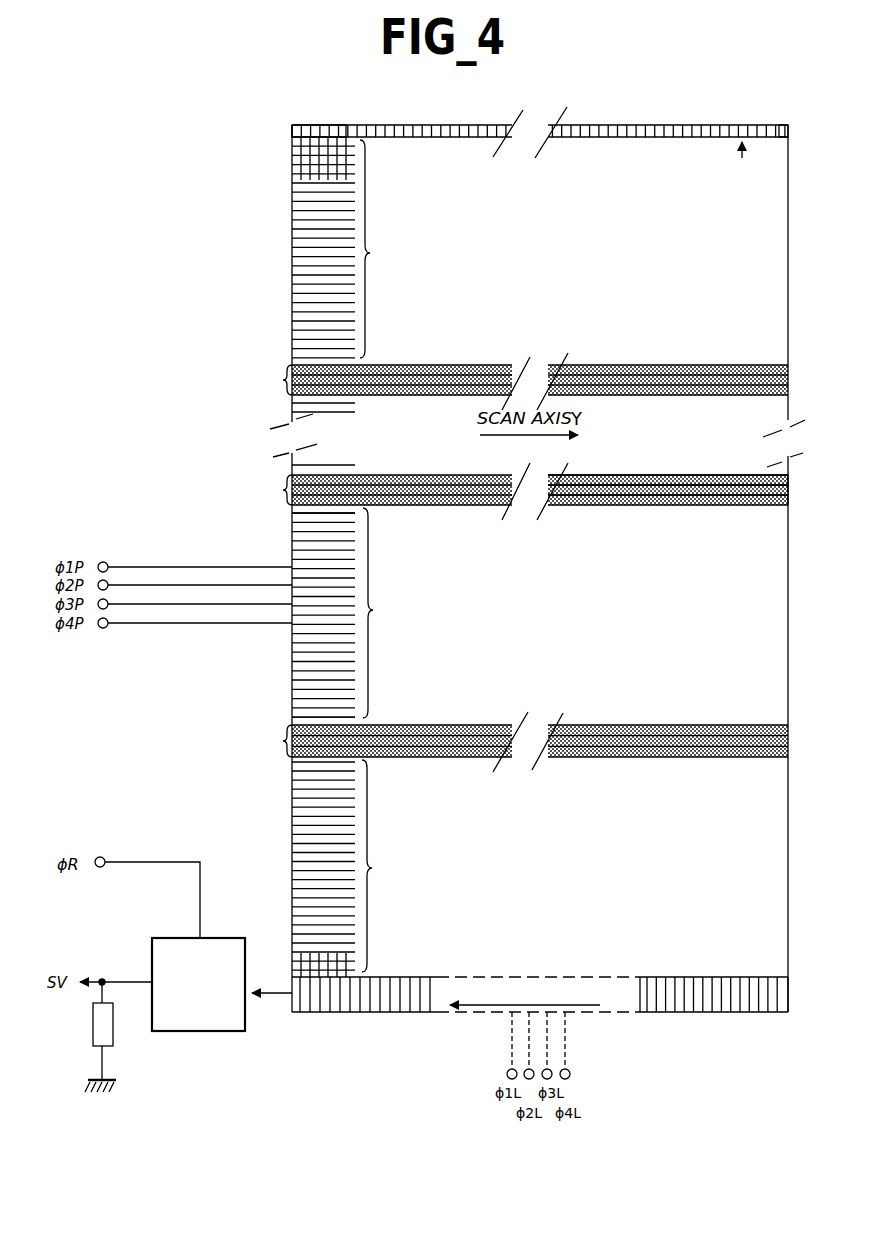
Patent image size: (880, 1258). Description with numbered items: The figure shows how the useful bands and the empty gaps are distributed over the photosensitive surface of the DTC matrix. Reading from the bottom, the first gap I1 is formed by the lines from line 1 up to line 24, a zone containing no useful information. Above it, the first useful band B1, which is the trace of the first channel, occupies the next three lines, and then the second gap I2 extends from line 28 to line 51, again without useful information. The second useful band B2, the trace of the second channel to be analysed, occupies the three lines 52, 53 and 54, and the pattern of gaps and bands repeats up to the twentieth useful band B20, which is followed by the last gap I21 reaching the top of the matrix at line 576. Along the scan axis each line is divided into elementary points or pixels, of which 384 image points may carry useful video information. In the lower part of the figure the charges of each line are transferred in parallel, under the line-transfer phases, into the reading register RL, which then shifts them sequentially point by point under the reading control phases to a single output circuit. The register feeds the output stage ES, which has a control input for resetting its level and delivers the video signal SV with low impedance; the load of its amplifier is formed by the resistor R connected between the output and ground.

The last gap I21 is at (540, 264).
The second gap I2 is at (540, 732).
The first gap I1 is at (520, 868).
The twentieth useful band B20 is at (660, 362).
The second useful band B2 is at (668, 472).
The first useful band B1 is at (647, 721).
The last line 576 is at (292, 126).
The image points 384 is at (788, 125).
The line fifty-four 54 is at (677, 482).
The line fifty-three 53 is at (677, 493).
The line fifty-two 52 is at (677, 504).
The line fifty-one 51 is at (292, 512).
The line twenty-eight 28 is at (292, 722).
The line twenty-four 24 is at (292, 762).
The line one 1 is at (292, 975).
The reading register RL is at (665, 977).
The output stage ES is at (217, 938).
The resistor R is at (100, 1037).